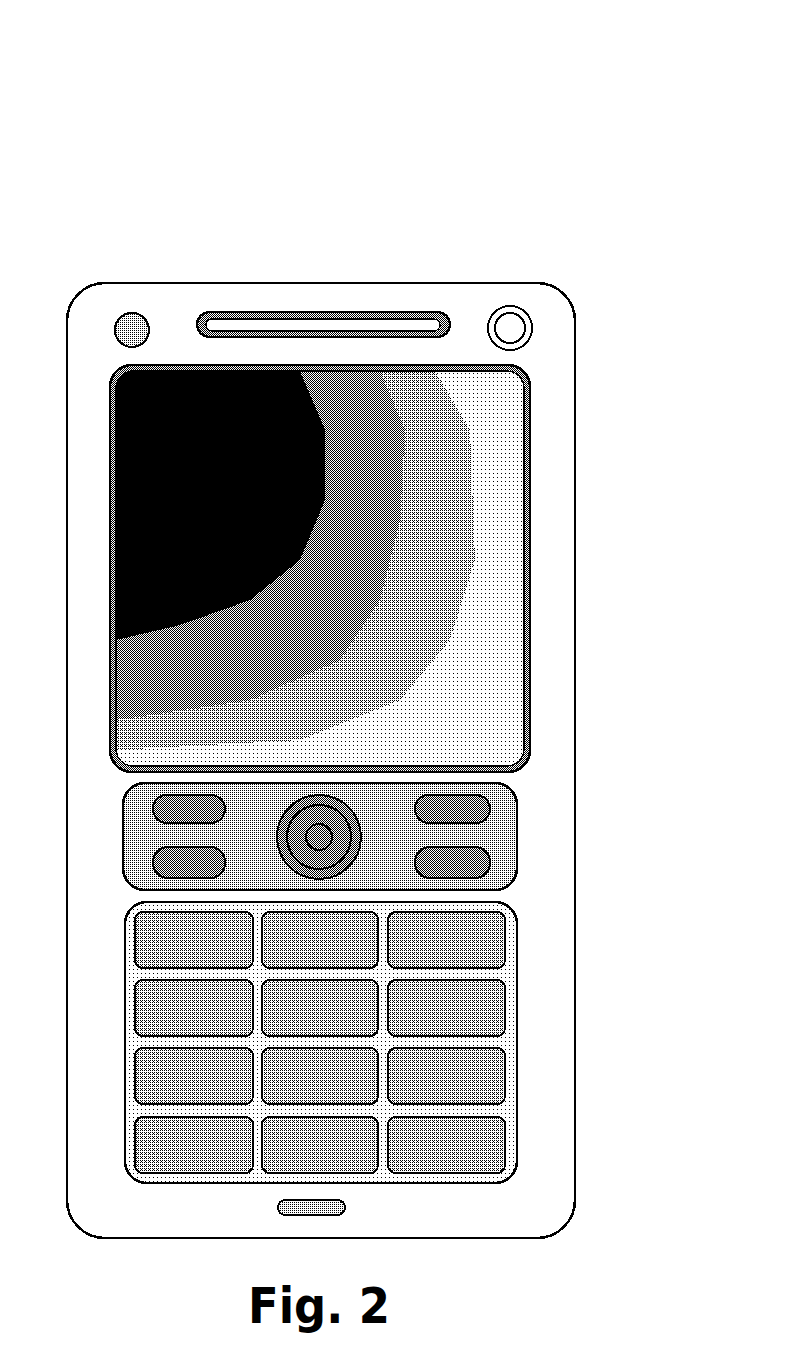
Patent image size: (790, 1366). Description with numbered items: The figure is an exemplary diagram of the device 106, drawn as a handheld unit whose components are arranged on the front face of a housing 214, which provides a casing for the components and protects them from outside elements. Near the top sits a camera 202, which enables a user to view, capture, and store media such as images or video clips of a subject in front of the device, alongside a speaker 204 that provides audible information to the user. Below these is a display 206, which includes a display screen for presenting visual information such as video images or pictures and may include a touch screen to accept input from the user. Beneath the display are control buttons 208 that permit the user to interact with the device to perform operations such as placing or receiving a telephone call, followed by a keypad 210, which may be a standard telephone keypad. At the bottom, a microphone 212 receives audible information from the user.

The device 106 is at (334, 160).
The camera 202 is at (132, 313).
The speaker 204 is at (296, 325).
The display 206 is at (465, 367).
The control buttons 208 is at (517, 837).
The keypad 210 is at (517, 1043).
The microphone 212 is at (345, 1208).
The housing 214 is at (575, 581).